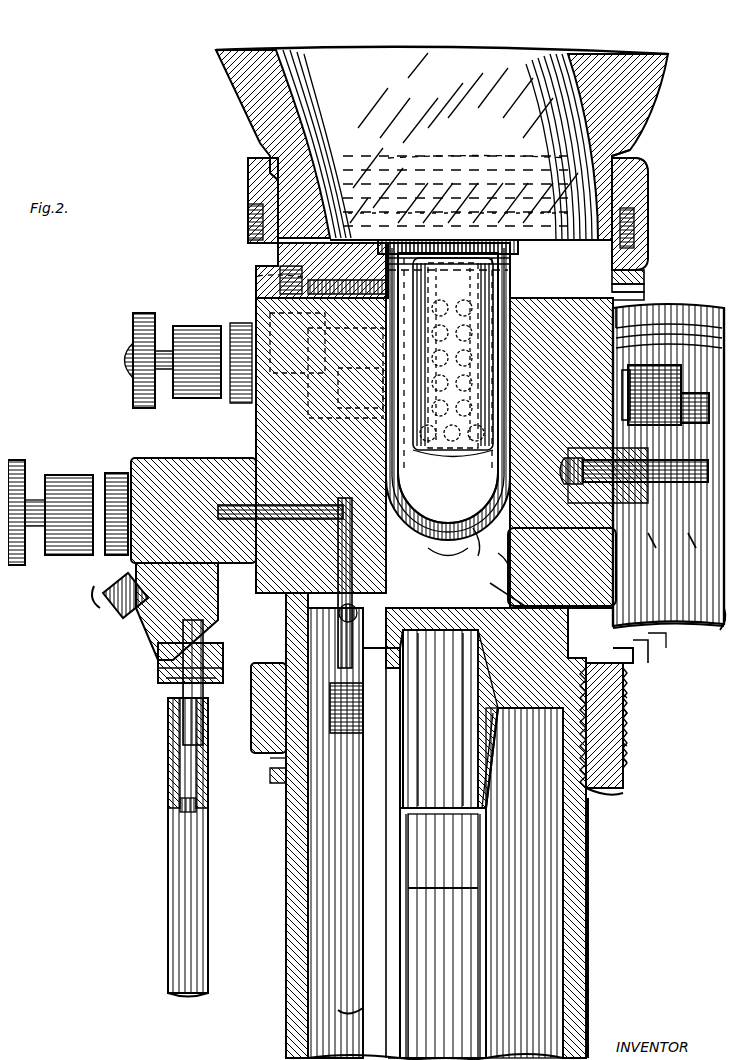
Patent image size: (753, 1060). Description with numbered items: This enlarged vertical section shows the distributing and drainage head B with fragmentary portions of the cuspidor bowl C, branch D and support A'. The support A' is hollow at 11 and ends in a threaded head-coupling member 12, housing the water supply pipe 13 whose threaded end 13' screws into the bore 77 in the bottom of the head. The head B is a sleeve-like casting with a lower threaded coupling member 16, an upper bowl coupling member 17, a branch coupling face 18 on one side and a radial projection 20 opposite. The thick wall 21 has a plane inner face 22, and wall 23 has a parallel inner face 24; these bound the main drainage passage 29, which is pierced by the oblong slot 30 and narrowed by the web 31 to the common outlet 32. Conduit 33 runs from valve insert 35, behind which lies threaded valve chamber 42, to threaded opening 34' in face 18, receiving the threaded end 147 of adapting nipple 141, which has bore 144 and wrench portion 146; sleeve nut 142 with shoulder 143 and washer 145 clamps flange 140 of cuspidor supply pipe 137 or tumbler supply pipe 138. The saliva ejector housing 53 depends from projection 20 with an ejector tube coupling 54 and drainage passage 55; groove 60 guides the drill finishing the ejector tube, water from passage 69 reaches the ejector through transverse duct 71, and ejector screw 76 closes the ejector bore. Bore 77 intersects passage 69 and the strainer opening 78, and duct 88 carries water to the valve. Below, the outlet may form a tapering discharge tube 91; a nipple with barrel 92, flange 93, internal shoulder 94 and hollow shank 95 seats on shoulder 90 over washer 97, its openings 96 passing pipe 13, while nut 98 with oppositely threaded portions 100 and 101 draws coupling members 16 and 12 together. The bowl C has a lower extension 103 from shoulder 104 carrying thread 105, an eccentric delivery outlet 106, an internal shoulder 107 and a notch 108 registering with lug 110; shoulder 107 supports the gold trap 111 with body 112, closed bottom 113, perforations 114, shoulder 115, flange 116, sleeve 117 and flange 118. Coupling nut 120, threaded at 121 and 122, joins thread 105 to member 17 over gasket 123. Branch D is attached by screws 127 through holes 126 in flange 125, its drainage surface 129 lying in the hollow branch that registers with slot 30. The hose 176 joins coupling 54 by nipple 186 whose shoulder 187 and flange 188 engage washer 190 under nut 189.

The hollow upper end of support 11 is at (578, 893).
The threaded head-coupling member 12 is at (613, 730).
The water supply pipe 13 is at (304, 833).
The threaded end of water supply pipe 13' is at (251, 708).
The threaded coupling member 16 is at (619, 680).
The bowl coupling member 17 is at (636, 262).
The branch coupling face 18 is at (660, 308).
The radial projection 20 is at (186, 458).
The thickened wall 21 is at (262, 445).
The inner face 22 is at (378, 540).
The wall 23 is at (470, 500).
The inner face 24 is at (470, 535).
The main drainage passage 29 is at (440, 577).
The oblong slot 30 is at (562, 594).
The web 31 is at (488, 577).
The common outlet 32 is at (437, 640).
The water conduit 33 is at (436, 441).
The tapering threaded opening 34' is at (667, 545).
The valve insert 35 is at (250, 268).
The valve chamber 42 is at (272, 425).
The saliva ejector housing 53 is at (160, 648).
The ejector tube coupling 54 is at (212, 655).
The drainage passage 55 is at (195, 634).
The vertical groove 60 is at (395, 500).
The water supply passage 69 is at (240, 472).
The transverse duct 71 is at (165, 468).
The ejector screw 76 is at (90, 603).
The threaded bore 77 is at (330, 602).
The strainer opening 78 is at (338, 632).
The water duct 88 is at (245, 420).
The shoulder 90 is at (622, 703).
The tapering discharge tube 91 is at (540, 800).
The tapering barrel 92 is at (576, 786).
The flange 93 is at (268, 762).
The internal shoulder 94 is at (520, 836).
The hollow shank 95 is at (482, 862).
The opening 96 is at (617, 748).
The washer 97 is at (614, 766).
The nut coupling element 98 is at (628, 664).
The threaded portion 100 is at (655, 690).
The threaded portion 101 is at (650, 735).
The lower extension 103 is at (628, 222).
The shoulder 104 is at (628, 152).
The thread 105 is at (641, 186).
The delivery outlet 106 is at (250, 246).
The internal shoulder 107 is at (240, 210).
The notch 108 is at (235, 262).
The lug 110 is at (232, 300).
The gold trap 111 is at (414, 473).
The outer cylindrical body 112 is at (408, 218).
The closed bottom 113 is at (430, 522).
The perforations 114 is at (415, 323).
The shoulder 115 is at (418, 278).
The flange 116 is at (410, 188).
The sleeve 117 is at (418, 296).
The flange 118 is at (398, 246).
The coupling nut 120 is at (240, 174).
The thread 121 is at (642, 170).
The thread 122 is at (636, 276).
The gasket 123 is at (636, 290).
The angular flange 125 is at (660, 665).
The holes 126 is at (650, 640).
The screws 127 is at (662, 650).
The drainage surface 129 is at (702, 606).
The cuspidor supply pipe 137 is at (694, 340).
The tumbler supply pipe 138 is at (655, 512).
The flange 140 is at (690, 443).
The adapting nipple 141 is at (418, 455).
The sleeve nut 142 is at (692, 318).
The shoulder 143 is at (702, 465).
The bore 144 is at (702, 400).
The washer 145 is at (690, 420).
The wrench receiving portion 146 is at (712, 536).
The threaded end 147 is at (500, 558).
The hose 176 is at (165, 873).
The nipple 186 is at (170, 800).
The shoulder 187 is at (172, 692).
The flange 188 is at (160, 672).
The nut 189 is at (165, 684).
The washer 190 is at (150, 664).
The casing A' is at (462, 999).
The head B is at (250, 292).
The cuspidor bowl C is at (630, 108).
The branch D is at (700, 554).